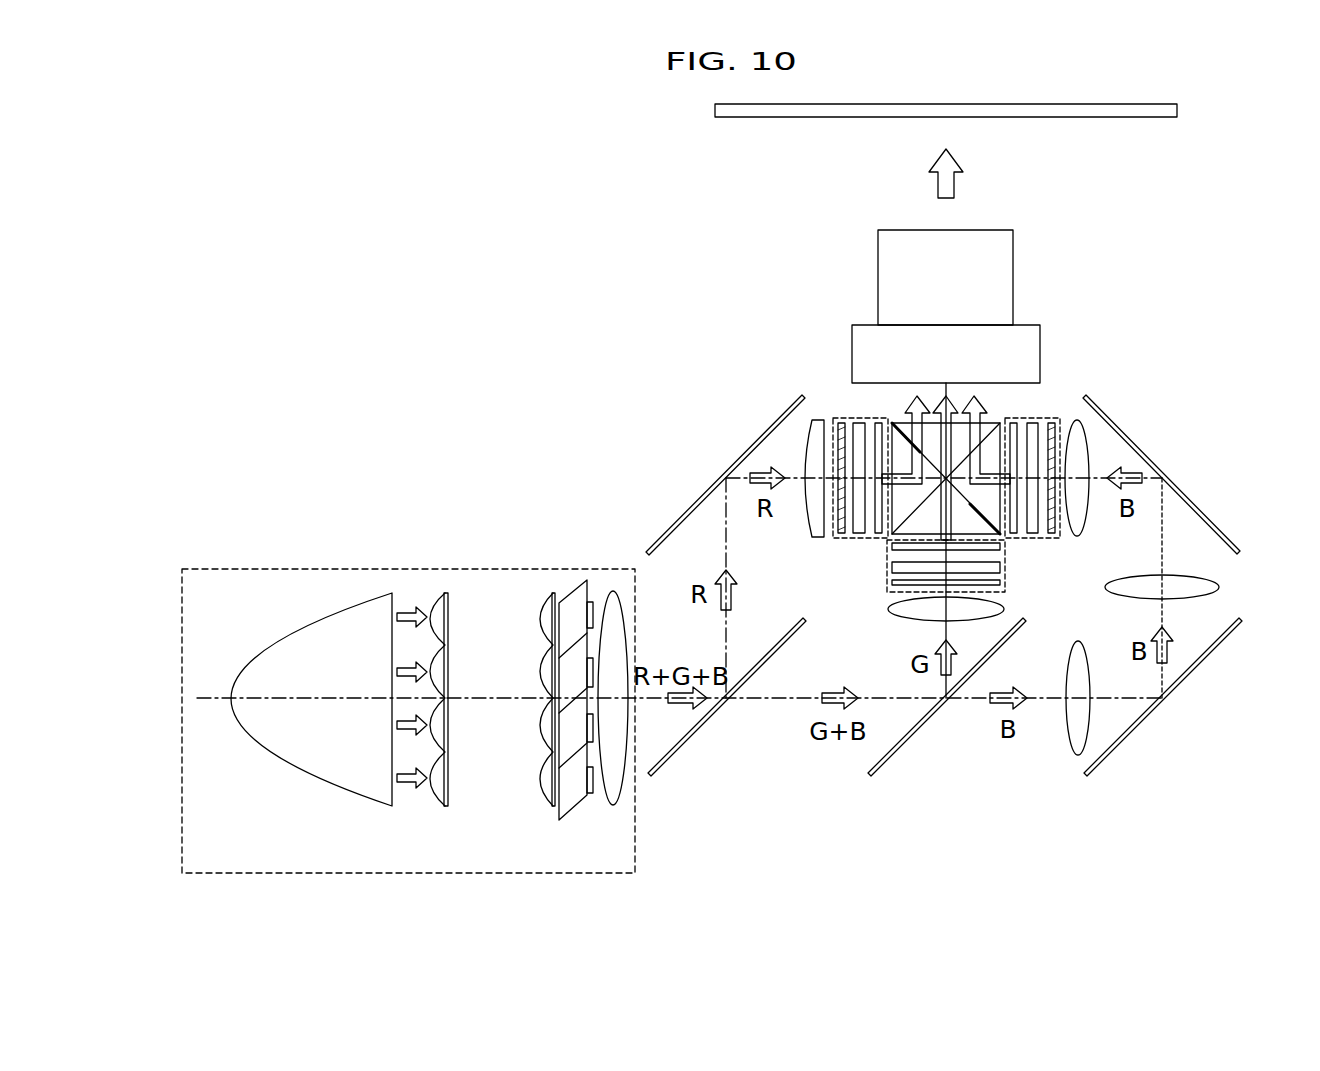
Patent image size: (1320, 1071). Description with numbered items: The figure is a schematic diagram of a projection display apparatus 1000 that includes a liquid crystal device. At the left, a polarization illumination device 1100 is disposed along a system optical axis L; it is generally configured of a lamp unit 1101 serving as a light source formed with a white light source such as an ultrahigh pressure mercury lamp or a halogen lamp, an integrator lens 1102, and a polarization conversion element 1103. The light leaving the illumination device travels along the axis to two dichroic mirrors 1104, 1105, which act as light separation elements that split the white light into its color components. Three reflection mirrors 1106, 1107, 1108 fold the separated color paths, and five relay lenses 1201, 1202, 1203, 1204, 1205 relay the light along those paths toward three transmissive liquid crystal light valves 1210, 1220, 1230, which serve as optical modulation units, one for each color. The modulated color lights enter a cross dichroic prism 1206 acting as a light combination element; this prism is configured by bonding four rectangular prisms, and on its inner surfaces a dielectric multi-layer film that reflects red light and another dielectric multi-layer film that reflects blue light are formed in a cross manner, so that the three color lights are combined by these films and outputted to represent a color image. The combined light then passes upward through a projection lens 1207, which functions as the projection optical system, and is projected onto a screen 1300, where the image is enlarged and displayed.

The projection display apparatus 1000 is at (1228, 237).
The polarization illumination device 1100 is at (427, 566).
The lamp unit 1101 is at (310, 787).
The integrator lens 1102 is at (441, 810).
The polarization conversion element 1103 is at (632, 828).
The dichroic mirror 1104 is at (690, 745).
The dichroic mirror 1105 is at (910, 745).
The reflection mirror 1106 is at (724, 476).
The reflection mirror 1107 is at (1127, 743).
The reflection mirror 1108 is at (1170, 474).
The relay lens 1201 is at (1078, 757).
The relay lens 1202 is at (1220, 587).
The relay lens 1203 is at (1077, 538).
The relay lens 1204 is at (888, 612).
The relay lens 1205 is at (815, 540).
The cross dichroic prism 1206 is at (998, 420).
The projection lens 1207 is at (1003, 275).
The transmissive liquid crystal light valve 1210 is at (842, 418).
The transmissive liquid crystal light valve 1220 is at (1008, 586).
The transmissive liquid crystal light valve 1230 is at (1055, 418).
The screen 1300 is at (1100, 118).
The system optical axis L is at (215, 697).